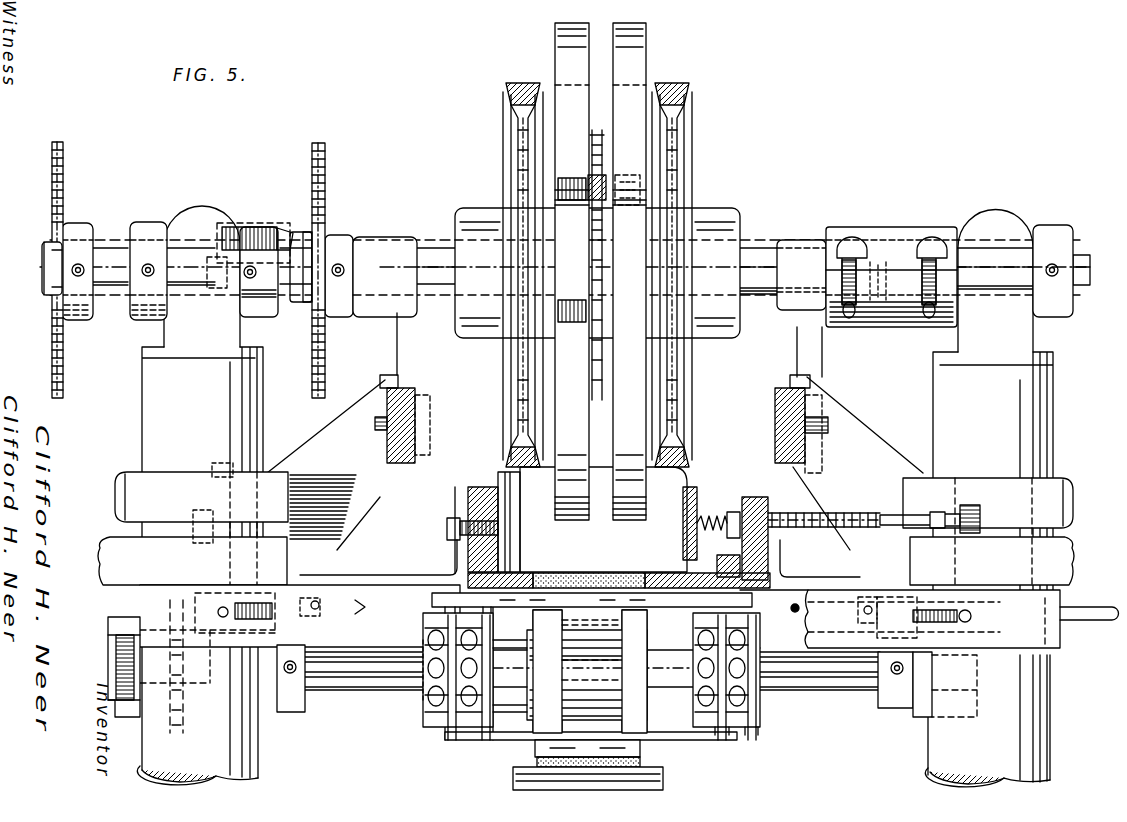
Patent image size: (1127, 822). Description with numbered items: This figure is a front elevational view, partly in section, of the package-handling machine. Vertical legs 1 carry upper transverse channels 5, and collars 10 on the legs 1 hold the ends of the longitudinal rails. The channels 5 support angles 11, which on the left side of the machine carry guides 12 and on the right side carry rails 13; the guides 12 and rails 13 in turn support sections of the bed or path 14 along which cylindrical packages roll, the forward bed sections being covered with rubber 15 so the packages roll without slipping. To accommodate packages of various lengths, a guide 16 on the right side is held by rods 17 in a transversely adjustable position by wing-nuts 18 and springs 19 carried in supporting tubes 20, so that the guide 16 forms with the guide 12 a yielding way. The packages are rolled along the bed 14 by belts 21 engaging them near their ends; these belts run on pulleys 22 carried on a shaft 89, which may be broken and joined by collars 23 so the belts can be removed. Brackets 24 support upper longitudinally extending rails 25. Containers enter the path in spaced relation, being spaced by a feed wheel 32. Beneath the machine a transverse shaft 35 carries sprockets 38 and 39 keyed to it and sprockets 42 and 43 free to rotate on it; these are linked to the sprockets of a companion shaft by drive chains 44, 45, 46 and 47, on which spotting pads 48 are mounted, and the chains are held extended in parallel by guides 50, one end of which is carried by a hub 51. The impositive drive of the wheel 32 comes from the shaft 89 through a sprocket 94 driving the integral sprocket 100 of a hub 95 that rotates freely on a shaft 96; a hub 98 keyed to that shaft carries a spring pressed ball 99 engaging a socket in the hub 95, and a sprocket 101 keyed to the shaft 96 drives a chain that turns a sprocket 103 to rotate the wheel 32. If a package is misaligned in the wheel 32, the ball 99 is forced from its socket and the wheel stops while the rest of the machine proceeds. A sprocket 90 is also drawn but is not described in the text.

The legs 1 is at (1028, 424).
The upper transverse channels 5 is at (395, 640).
The collars 10 is at (118, 492).
The angles 11 is at (413, 573).
The guides 12 is at (478, 490).
The rails 13 is at (748, 500).
The bed or path 14 is at (545, 590).
The rubber 15 is at (655, 606).
The guide 16 is at (693, 488).
The rods 17 is at (718, 520).
The wing-nuts 18 is at (985, 508).
The springs 19 is at (840, 515).
The supporting tubes 20 is at (865, 512).
The belts 21 is at (682, 86).
The pulleys 22 is at (503, 103).
The collars 23 is at (853, 230).
The brackets 24 is at (320, 434).
The upper longitudinally extending rails 25 is at (412, 390).
The feed wheel 32 is at (599, 271).
The shaft 35 is at (343, 687).
The sprocket 38 is at (757, 717).
The sprocket 39 is at (38, 258).
The sprocket 42 is at (742, 730).
The sprocket 43 is at (430, 697).
The drive chain 44 is at (718, 730).
The driving chain 45 is at (425, 625).
The driving chain 46 is at (742, 735).
The driving chain 47 is at (490, 630).
The spotting pads 48 is at (640, 765).
The guides 50 is at (628, 696).
The hub 51 is at (580, 710).
The shaft 89 is at (758, 252).
The sprocket 90 is at (65, 168).
The sprocket 94 is at (320, 215).
The hub 95 is at (285, 225).
The shaft 96 is at (213, 285).
The hub 98 is at (256, 224).
The spring pressed ball 99 is at (305, 235).
The integral sprocket 100 is at (318, 148).
The sprocket 101 is at (617, 197).
The sprocket 103 is at (593, 140).